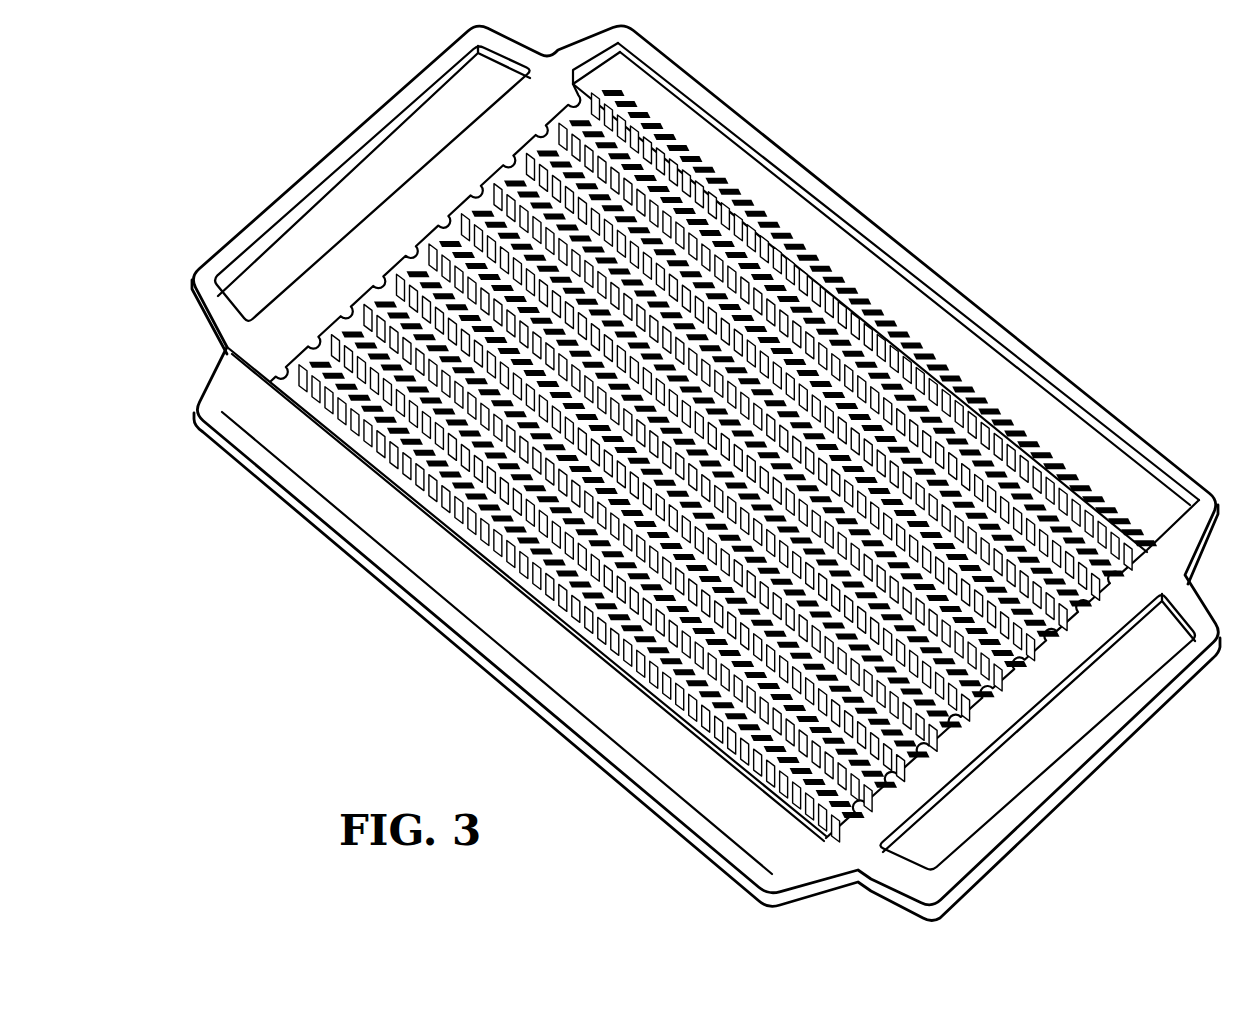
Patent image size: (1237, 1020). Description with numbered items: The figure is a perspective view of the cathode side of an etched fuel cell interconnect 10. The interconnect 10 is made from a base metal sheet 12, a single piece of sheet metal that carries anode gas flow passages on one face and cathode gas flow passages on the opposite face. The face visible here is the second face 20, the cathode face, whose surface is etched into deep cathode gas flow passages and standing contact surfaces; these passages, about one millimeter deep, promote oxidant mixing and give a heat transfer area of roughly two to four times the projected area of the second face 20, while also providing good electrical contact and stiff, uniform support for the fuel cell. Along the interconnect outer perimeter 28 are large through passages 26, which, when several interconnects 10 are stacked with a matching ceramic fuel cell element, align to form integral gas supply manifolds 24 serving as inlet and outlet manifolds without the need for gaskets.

The etched interconnect 10 is at (706, 473).
The base metal sheet 12 is at (1012, 727).
The second face 20 is at (807, 293).
The integral gas supply manifolds 24 is at (363, 490).
The through passages 26 is at (457, 573).
The interconnect outer perimeter 28 is at (563, 620).